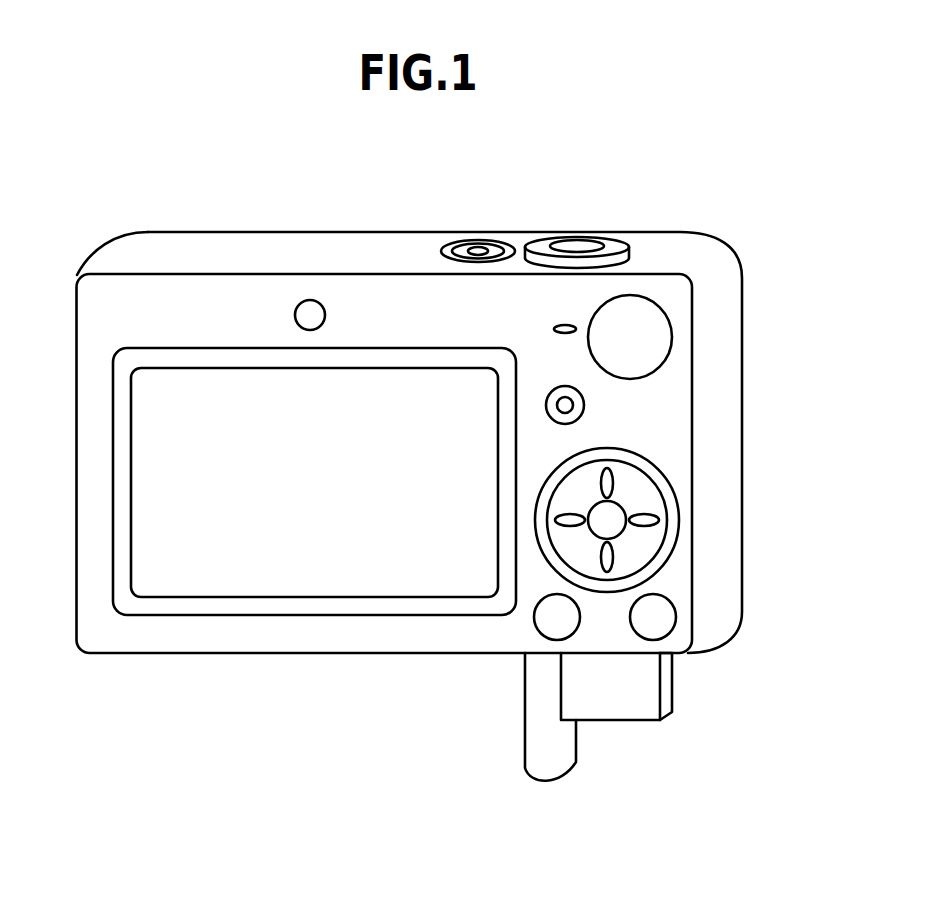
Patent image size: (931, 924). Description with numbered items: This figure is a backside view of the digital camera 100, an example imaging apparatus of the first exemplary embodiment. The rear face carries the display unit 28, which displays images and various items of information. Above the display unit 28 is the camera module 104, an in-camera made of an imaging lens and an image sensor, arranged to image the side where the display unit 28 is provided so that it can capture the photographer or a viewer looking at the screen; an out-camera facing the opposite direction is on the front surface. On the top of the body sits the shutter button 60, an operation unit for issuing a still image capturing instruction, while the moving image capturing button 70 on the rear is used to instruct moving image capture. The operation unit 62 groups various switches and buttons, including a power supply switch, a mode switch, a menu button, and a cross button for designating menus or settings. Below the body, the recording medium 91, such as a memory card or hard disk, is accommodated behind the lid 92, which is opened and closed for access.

The digital camera 100 is at (255, 680).
The display unit 28 is at (207, 392).
The camera module 104 is at (310, 312).
The shutter button 60 is at (577, 242).
The moving image capturing button 70 is at (557, 385).
The operation unit 62 is at (503, 258).
The recording medium 91 is at (647, 688).
The lid 92 is at (578, 762).